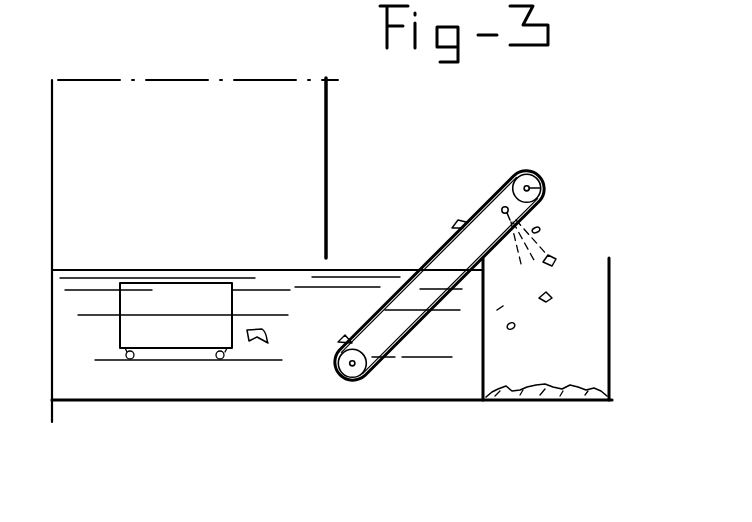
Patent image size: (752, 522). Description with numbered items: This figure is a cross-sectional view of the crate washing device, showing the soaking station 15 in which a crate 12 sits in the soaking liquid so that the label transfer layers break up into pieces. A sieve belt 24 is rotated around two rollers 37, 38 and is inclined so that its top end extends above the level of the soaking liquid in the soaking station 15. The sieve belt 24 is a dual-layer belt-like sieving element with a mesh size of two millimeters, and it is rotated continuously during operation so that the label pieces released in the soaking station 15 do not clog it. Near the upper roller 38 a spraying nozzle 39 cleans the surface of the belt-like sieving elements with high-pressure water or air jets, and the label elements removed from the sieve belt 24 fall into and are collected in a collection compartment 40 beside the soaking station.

The crate 12 is at (180, 333).
The soaking station 15 is at (300, 136).
The sieve belt 24 is at (424, 244).
The roller 37 is at (358, 379).
The roller 38 is at (546, 186).
The spraying nozzle 39 is at (493, 203).
The collection compartment 40 is at (560, 352).